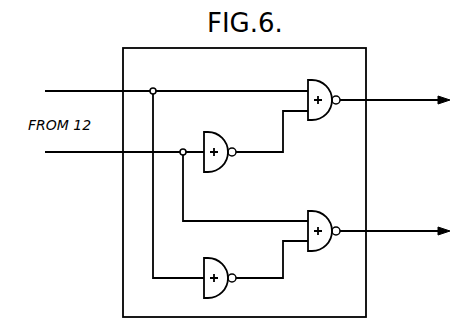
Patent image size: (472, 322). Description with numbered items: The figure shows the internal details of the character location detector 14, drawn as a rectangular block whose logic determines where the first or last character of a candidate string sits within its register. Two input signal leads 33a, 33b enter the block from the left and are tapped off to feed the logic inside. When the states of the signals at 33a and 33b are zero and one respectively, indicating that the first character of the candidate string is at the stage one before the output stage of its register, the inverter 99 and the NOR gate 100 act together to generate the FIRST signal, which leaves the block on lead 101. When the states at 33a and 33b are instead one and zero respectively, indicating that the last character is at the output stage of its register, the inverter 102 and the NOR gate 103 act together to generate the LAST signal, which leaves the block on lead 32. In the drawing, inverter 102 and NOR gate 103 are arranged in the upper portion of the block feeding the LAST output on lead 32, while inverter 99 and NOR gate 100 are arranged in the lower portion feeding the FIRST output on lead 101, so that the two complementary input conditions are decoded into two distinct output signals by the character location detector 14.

The character location detector 14 is at (347, 48).
The signal lead 33a is at (77, 89).
The signal lead 33b is at (72, 155).
The inverter 102 is at (221, 170).
The inverter 99 is at (221, 261).
The NOR gate 103 is at (323, 118).
The NOR gate 100 is at (323, 249).
The lead 32 is at (373, 102).
The lead 101 is at (374, 233).